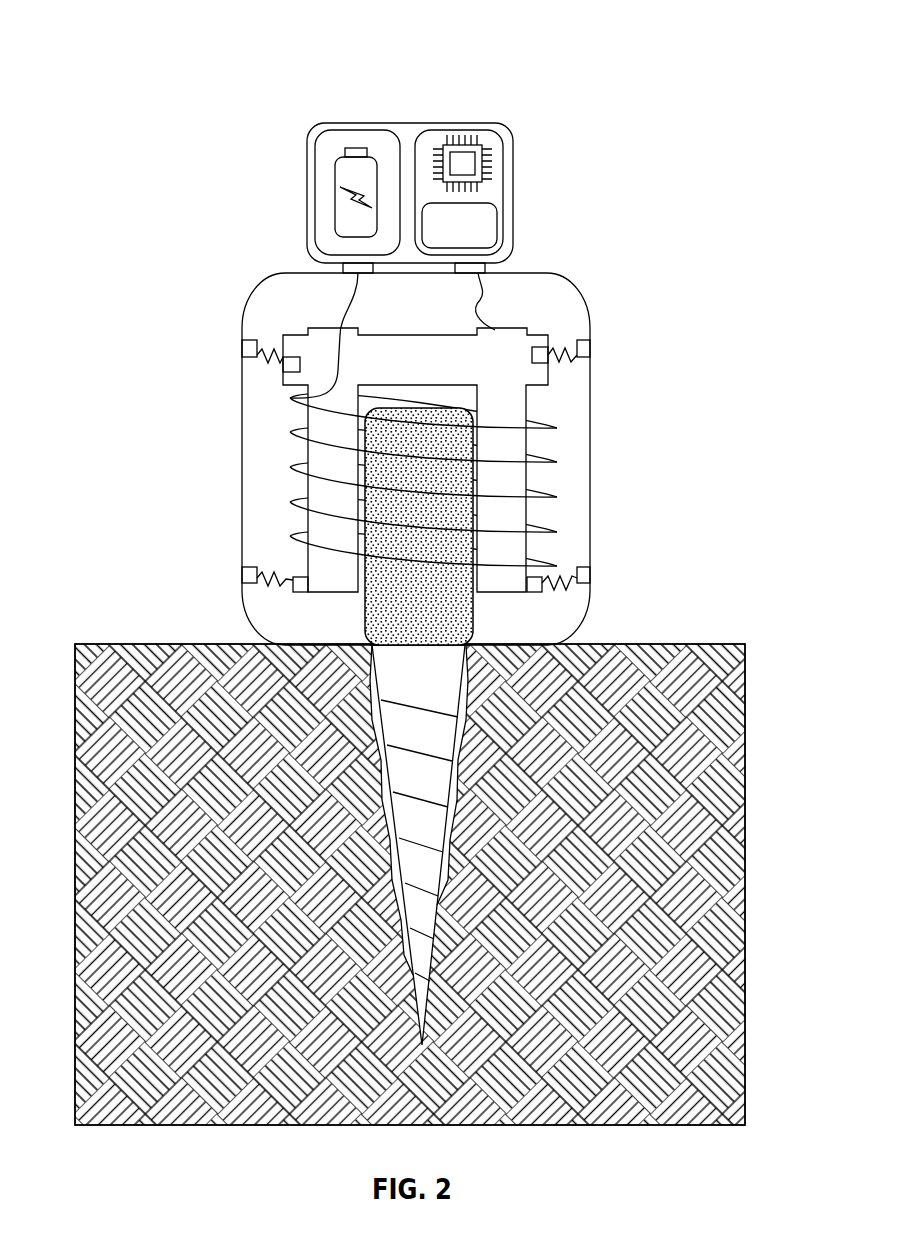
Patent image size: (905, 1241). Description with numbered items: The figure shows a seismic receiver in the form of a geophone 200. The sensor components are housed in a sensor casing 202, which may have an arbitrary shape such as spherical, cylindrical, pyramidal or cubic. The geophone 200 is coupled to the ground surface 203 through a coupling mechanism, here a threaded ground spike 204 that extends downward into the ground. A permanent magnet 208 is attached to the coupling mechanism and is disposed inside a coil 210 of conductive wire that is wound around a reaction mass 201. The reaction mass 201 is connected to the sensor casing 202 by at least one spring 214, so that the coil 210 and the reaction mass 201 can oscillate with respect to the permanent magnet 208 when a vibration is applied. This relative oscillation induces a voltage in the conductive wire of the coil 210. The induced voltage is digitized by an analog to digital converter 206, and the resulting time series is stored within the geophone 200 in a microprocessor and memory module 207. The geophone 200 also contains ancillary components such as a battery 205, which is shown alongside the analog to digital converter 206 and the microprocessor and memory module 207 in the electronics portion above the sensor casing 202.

The geophone 200 is at (214, 44).
The reaction mass 201 is at (317, 355).
The sensor casing 202 is at (242, 438).
The ground surface 203 is at (168, 643).
The threaded ground spike 204 is at (422, 866).
The battery 205 is at (356, 148).
The analog to digital converter 206 is at (497, 227).
The microprocessor and memory module 207 is at (463, 133).
The permanent magnet 208 is at (445, 620).
The coil 210 is at (557, 428).
The spring 214 is at (592, 331).